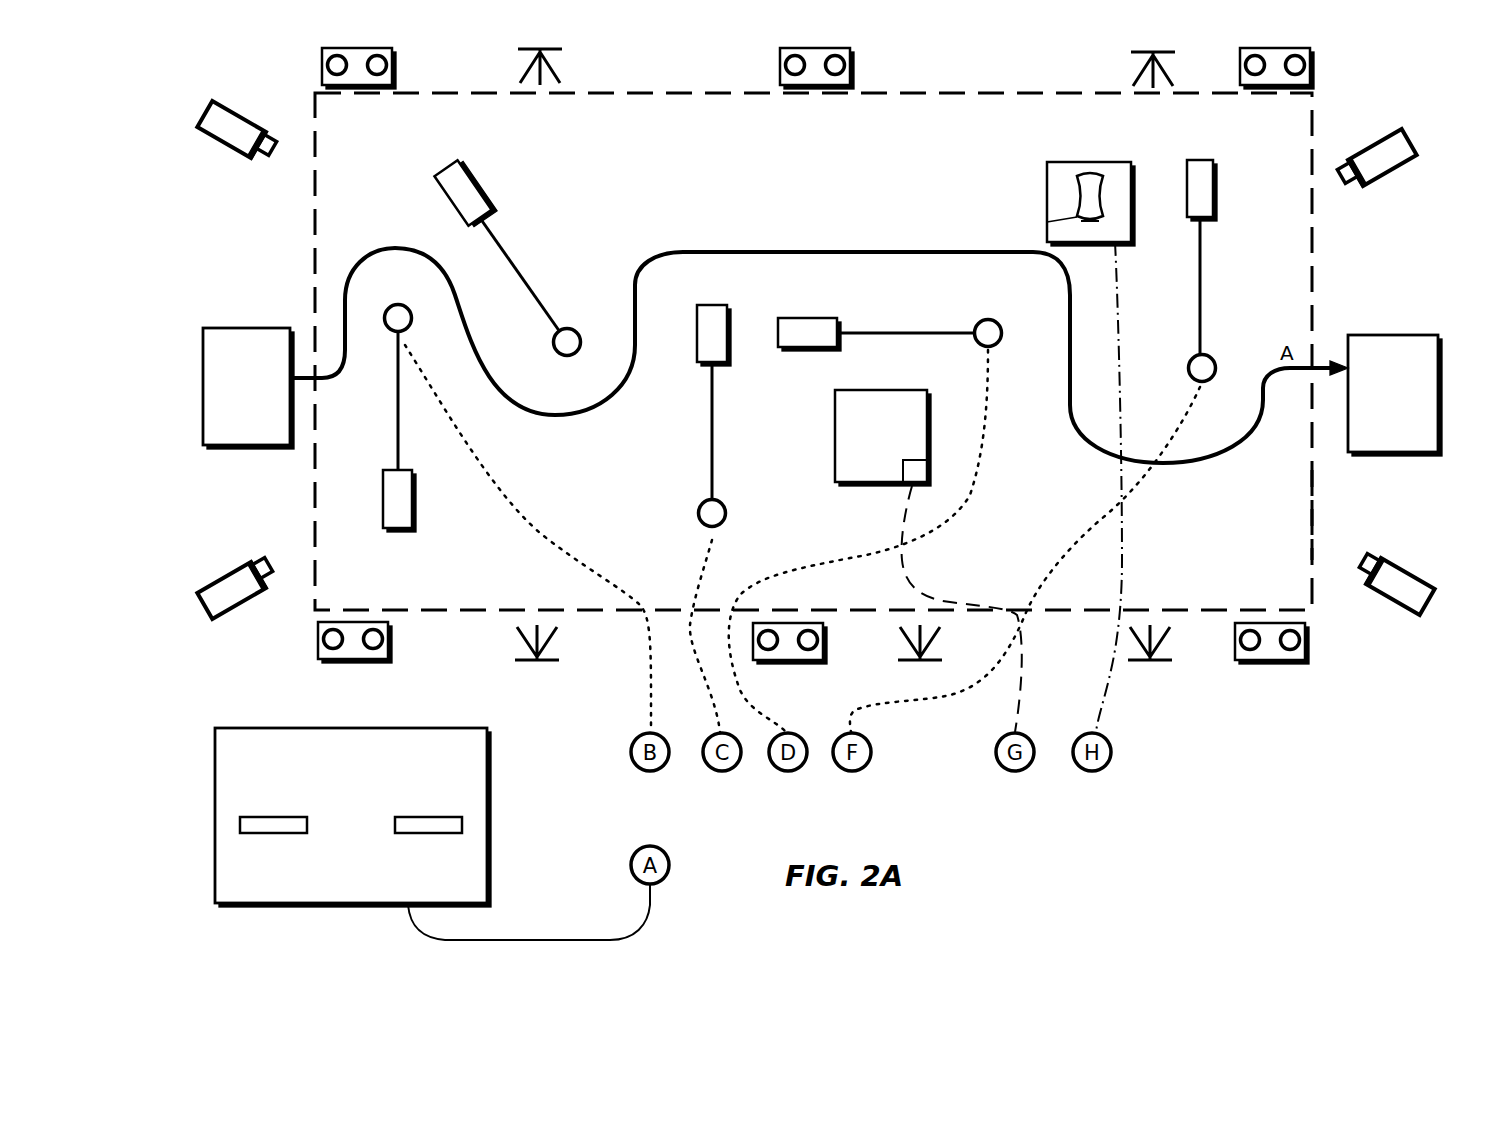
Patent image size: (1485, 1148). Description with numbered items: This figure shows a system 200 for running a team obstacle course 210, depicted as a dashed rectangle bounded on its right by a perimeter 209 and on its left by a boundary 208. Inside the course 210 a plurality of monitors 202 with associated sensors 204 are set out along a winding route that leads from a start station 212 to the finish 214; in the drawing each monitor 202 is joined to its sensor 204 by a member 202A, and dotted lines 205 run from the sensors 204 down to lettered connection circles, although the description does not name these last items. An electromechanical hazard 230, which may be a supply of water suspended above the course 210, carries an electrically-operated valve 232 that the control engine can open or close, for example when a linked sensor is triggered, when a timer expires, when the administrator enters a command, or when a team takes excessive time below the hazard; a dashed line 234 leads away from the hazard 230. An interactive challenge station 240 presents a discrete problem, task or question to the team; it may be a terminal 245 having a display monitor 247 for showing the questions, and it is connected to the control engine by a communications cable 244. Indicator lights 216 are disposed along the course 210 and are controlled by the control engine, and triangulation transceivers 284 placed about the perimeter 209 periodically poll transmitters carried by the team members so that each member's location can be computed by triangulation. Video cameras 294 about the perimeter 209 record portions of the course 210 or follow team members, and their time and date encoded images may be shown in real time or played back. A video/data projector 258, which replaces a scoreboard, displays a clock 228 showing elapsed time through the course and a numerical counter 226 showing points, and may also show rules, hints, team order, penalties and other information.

The system 200 is at (1380, 274).
The monitors 202 is at (384, 518).
The posts 202A is at (397, 438).
The sensors 204 is at (391, 307).
The ball travel paths 205 is at (546, 532).
The left boundary 208 is at (312, 487).
The perimeter 209 is at (1312, 512).
The obstacle course 210 is at (841, 150).
The start station 212 is at (266, 432).
The finish 214 is at (1413, 439).
The indicator lights 216 is at (322, 64).
The numerical counter 226 is at (240, 825).
The clock 228 is at (462, 827).
The electromechanical hazard 230 is at (888, 390).
The electrically-operated valve 232 is at (930, 470).
The dashed path 234 is at (928, 598).
The interactive challenge station 240 is at (1128, 162).
The terminal 245 is at (1090, 175).
The display monitor 247 is at (1047, 222).
The communications cable 244 is at (1120, 312).
The video/data projector 258 is at (266, 897).
The triangulation transceivers 284 is at (562, 75).
The video cameras 294 is at (215, 158).